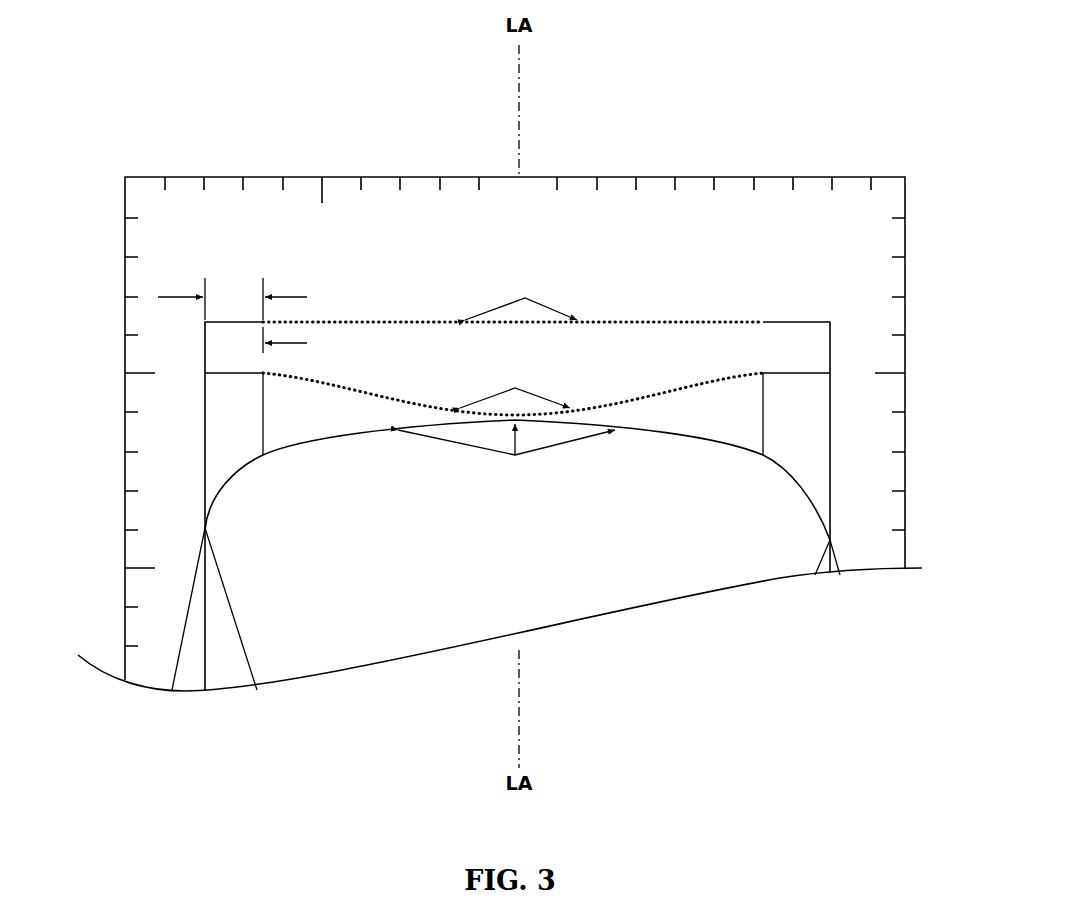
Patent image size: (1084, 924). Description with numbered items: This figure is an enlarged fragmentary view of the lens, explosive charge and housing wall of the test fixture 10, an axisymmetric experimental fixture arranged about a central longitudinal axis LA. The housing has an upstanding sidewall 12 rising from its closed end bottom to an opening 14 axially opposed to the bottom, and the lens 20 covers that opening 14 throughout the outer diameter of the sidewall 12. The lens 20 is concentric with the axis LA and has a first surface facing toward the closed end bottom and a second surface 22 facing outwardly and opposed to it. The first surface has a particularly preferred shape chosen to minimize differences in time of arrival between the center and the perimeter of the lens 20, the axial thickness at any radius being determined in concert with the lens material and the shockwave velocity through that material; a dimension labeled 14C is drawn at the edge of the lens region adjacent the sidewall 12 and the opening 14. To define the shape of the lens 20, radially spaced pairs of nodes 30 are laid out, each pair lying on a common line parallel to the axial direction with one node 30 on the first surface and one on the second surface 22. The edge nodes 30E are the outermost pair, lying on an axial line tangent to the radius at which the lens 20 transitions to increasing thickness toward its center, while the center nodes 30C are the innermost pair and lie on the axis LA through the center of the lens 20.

The test fixture 10 is at (325, 714).
The sidewall 12 is at (233, 427).
The opening 14 is at (747, 402).
The lens edge thickness 14C is at (232, 315).
The lens 20 is at (810, 342).
The second surface 22 is at (323, 322).
The nodes 30 is at (377, 322).
The center nodes 30C is at (516, 322).
The edge nodes 30E is at (263, 322).